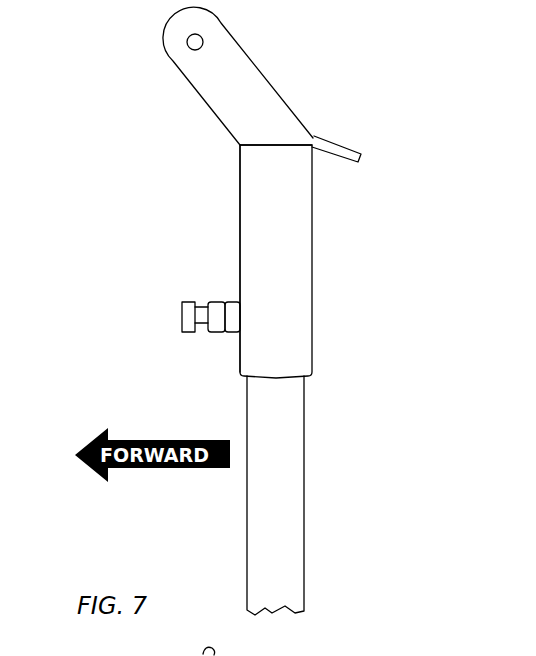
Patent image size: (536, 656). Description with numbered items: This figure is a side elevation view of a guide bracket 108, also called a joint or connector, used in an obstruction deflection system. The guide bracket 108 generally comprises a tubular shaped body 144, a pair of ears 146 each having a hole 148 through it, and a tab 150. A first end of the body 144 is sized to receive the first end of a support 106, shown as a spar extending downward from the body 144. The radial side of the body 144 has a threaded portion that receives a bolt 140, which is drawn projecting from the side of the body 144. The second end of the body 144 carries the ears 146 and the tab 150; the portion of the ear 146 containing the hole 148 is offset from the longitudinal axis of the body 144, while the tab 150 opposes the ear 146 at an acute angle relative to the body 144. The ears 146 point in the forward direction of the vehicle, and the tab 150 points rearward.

The support 106 is at (304, 488).
The guide bracket 108 is at (312, 238).
The bolt 140 is at (182, 308).
The tubular shaped body 144 is at (240, 212).
The ear 146 is at (258, 71).
The hole 148 is at (190, 46).
The tab 150 is at (343, 147).